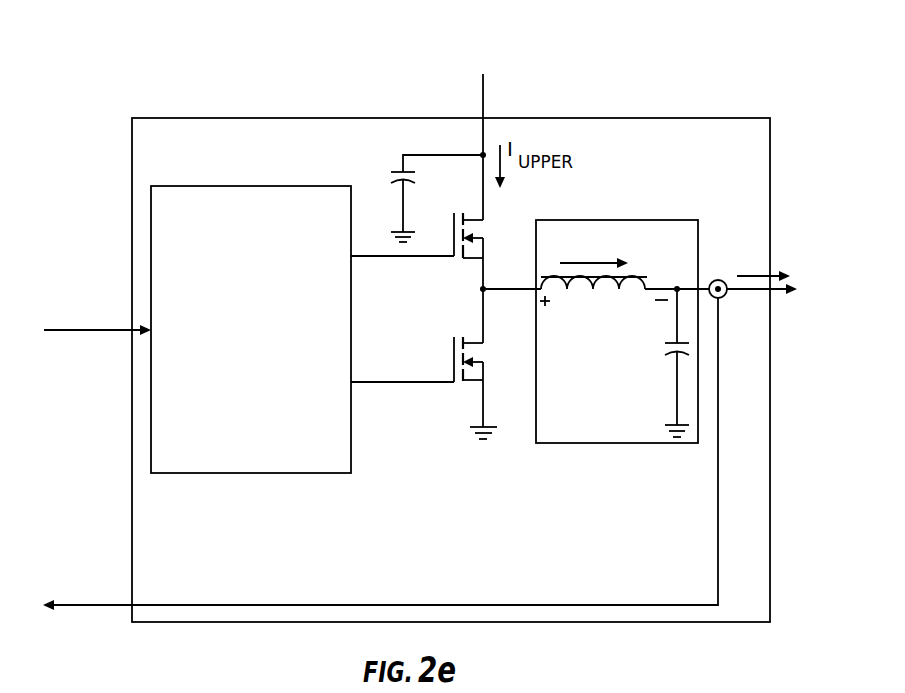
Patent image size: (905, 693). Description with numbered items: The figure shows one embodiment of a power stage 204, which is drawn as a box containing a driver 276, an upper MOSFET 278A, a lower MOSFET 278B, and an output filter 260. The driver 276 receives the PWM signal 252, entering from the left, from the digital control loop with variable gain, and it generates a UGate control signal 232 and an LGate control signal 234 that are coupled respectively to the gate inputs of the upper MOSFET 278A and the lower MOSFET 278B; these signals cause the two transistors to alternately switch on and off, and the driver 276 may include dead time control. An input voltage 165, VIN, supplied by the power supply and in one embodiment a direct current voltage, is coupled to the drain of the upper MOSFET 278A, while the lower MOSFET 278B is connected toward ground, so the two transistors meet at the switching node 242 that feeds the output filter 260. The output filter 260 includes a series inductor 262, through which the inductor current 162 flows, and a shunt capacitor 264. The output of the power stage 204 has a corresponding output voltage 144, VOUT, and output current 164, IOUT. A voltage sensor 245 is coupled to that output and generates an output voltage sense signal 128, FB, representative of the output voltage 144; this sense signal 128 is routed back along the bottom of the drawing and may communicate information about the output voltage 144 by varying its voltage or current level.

The power stage 204 is at (340, 118).
The driver 276 is at (262, 299).
The PWM signal 252 is at (100, 330).
The input voltage 165 is at (485, 95).
The UGate control signal 232 is at (400, 256).
The LGate control signal 234 is at (420, 382).
The upper MOSFET 278A is at (472, 237).
The lower MOSFET 278B is at (454, 360).
The switching node 242 is at (510, 314).
The output filter 260 is at (579, 434).
The inductor current IL 162 is at (625, 256).
The series inductor 262 is at (604, 307).
The shunt capacitor 264 is at (660, 361).
The voltage sensor 245 is at (718, 280).
The output current 164 is at (758, 245).
The output voltage 144 is at (785, 309).
The output voltage sense signal 128 is at (118, 605).